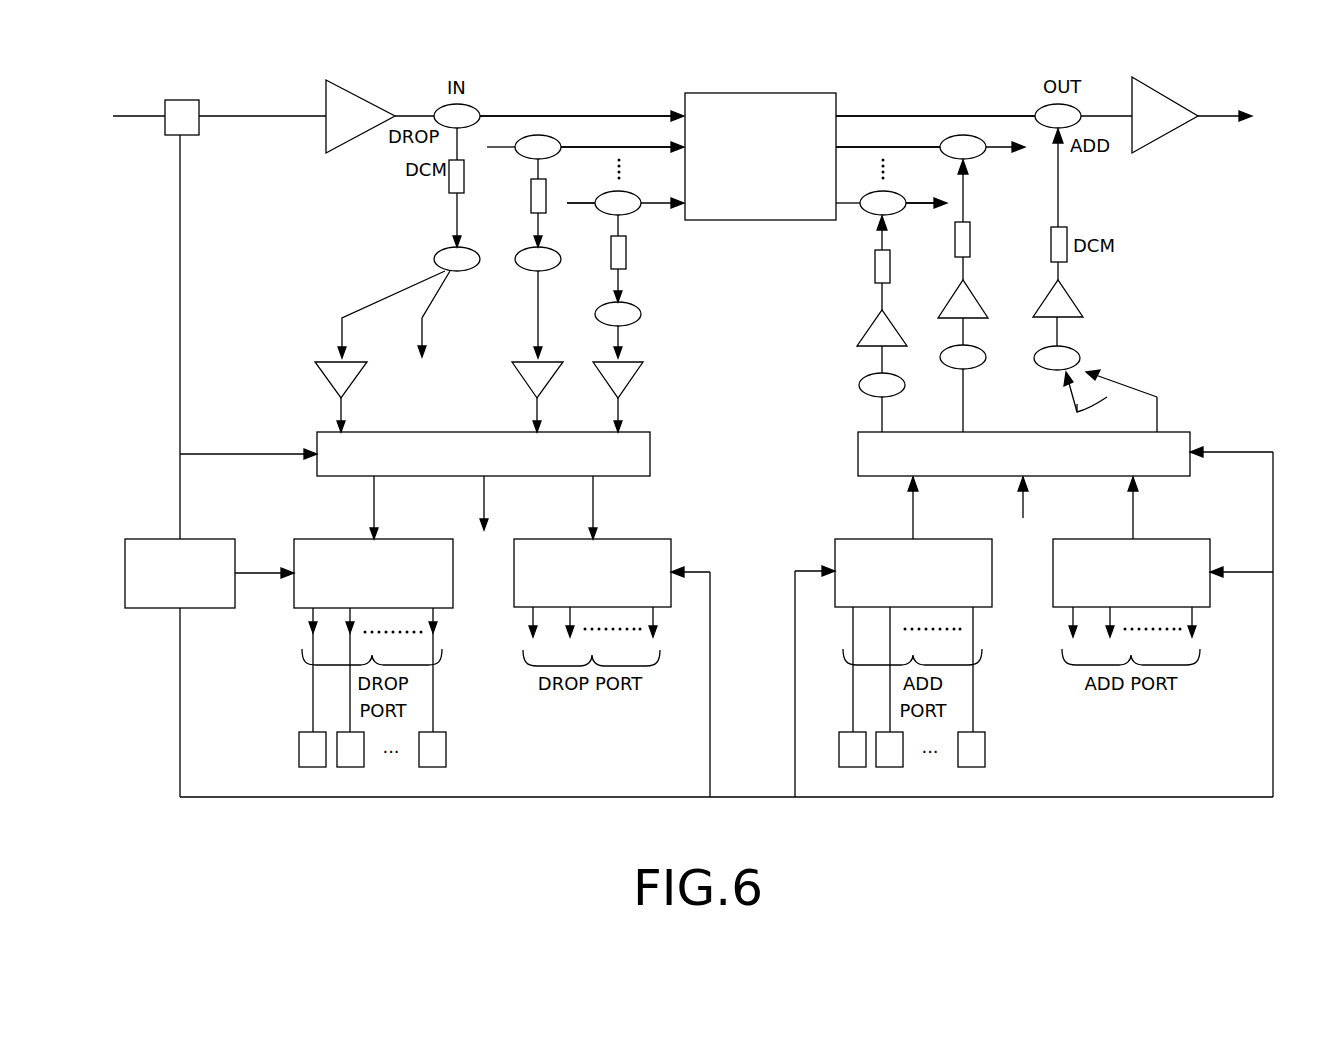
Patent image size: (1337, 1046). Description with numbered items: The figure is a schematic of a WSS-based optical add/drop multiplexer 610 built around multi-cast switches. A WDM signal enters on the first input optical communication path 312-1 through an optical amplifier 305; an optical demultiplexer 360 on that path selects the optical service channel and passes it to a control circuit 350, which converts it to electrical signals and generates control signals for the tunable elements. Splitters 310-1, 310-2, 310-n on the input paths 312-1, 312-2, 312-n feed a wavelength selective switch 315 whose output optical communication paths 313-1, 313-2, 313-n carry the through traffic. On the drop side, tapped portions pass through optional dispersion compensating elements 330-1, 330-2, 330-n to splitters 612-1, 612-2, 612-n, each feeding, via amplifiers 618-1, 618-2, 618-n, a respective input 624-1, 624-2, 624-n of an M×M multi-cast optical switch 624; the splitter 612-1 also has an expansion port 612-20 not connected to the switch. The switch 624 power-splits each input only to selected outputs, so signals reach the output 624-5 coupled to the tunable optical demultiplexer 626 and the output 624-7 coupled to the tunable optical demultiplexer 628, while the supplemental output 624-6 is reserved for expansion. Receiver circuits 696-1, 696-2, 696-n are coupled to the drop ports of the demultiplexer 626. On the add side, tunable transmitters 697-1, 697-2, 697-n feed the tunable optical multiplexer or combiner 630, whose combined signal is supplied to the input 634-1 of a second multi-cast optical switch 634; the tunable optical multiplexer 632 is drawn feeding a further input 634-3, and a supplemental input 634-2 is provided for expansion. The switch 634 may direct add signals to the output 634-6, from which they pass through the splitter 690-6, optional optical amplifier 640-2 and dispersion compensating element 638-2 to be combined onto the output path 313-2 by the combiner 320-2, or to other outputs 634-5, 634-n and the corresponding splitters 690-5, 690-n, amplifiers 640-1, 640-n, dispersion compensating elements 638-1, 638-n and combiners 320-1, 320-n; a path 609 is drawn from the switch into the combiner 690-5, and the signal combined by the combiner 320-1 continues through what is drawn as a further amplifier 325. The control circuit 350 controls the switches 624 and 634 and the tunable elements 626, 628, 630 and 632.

The optical amplifier 305 is at (325, 95).
The splitter 310-1 is at (440, 103).
The splitter 310-2 is at (543, 133).
The splitter 310-n is at (643, 210).
The first input optical communication path 312-1 is at (603, 110).
The input optical communication path 312-2 is at (653, 147).
The input optical communication path 312-n is at (578, 207).
The output optical communication path 313-1 is at (955, 112).
The output optical communication path 313-2 is at (847, 145).
The output optical communication path 313-n is at (923, 203).
The wavelength selective switch 315 is at (737, 92).
The combiner 320-1 is at (1085, 108).
The combiner 320-2 is at (987, 138).
The combiner 320-n is at (866, 213).
The output amplifier 325 is at (1165, 137).
The dispersion compensating element 330-1 is at (449, 192).
The dispersion compensating element 330-2 is at (530, 208).
The dispersion compensating element 330-n is at (627, 253).
The control circuit 350 is at (142, 538).
The optical demultiplexer 360 is at (178, 100).
The add path line 609 is at (1125, 378).
The optical add/drop multiplexer 610 is at (1172, 826).
The splitter 612-1 is at (437, 254).
The splitter 612-2 is at (527, 272).
The splitter 612-n is at (638, 320).
The expansion port 612-20 is at (422, 327).
The amplifier 618-1 is at (325, 385).
The amplifier 618-2 is at (520, 385).
The amplifier 618-n is at (630, 385).
The multi-cast optical switch 624 is at (652, 447).
The multi-cast switch input 624-1 is at (340, 414).
The multi-cast switch input 624-2 is at (532, 422).
The multi-cast switch input 624-n is at (620, 420).
The multi-cast switch output 624-5 is at (373, 487).
The supplemental output 624-6 is at (483, 497).
The multi-cast switch output 624-7 is at (596, 497).
The tunable optical demultiplexer 626 is at (293, 595).
The tunable optical demultiplexer 628 is at (672, 548).
The tunable optical multiplexer 630 is at (990, 607).
The tunable optical multiplexer 632 is at (1208, 607).
The multi-cast optical switch 634 is at (1190, 433).
The multi-cast switch input 634-1 is at (912, 525).
The supplemental input 634-2 is at (1023, 515).
The add multi-cast switch input 634-3 is at (1133, 518).
The multi-cast switch output 634-5 is at (1157, 397).
The multi-cast switch output 634-6 is at (963, 402).
The multi-cast switch output 634-n is at (878, 410).
The dispersion compensating element 638-1 is at (1070, 222).
The dispersion compensating element 638-2 is at (970, 230).
The dispersion compensating element 638-n is at (875, 265).
The optical amplifier 640-1 is at (1067, 287).
The optical amplifier 640-2 is at (1012, 288).
The optical amplifier 640-n is at (865, 330).
The splitter 690-5 is at (1077, 342).
The splitter 690-6 is at (985, 370).
The splitter 690-n is at (868, 378).
The receiver circuit 696-1 is at (299, 750).
The receiver circuit 696-2 is at (350, 768).
The receiver circuit 696-n is at (446, 745).
The tunable transmitter 697-1 is at (853, 768).
The tunable transmitter 697-2 is at (890, 768).
The tunable transmitter 697-n is at (984, 747).